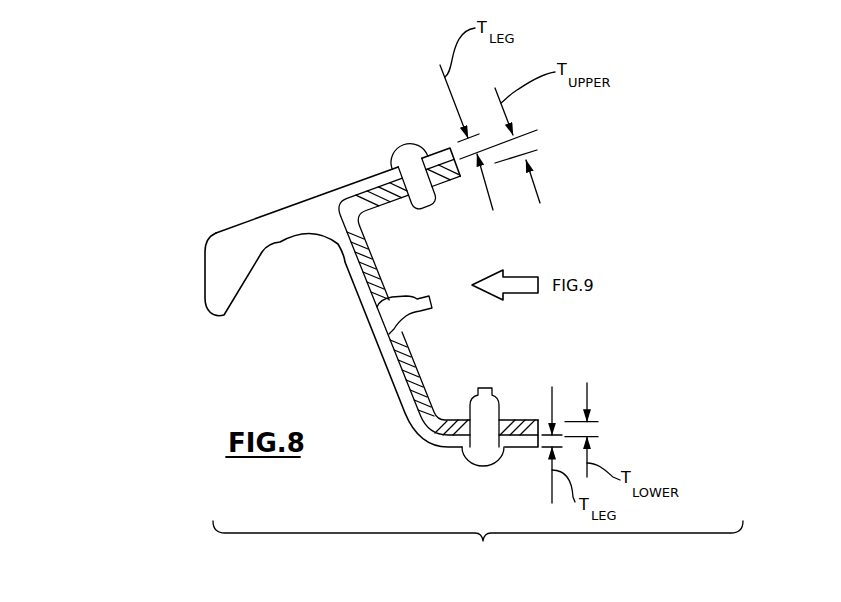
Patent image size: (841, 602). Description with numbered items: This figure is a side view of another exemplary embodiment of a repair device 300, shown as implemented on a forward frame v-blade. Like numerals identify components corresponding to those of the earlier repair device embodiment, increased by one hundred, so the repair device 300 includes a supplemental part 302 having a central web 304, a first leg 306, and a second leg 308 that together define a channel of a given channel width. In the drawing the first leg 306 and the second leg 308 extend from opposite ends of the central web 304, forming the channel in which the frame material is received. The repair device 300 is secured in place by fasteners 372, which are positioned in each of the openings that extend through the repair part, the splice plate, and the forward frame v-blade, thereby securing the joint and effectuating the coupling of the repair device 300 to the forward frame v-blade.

The repair device 300 is at (185, 128).
The supplemental part 302 is at (483, 541).
The central web 304 is at (188, 396).
The first leg 306 is at (642, 120).
The second leg 308 is at (648, 428).
The fasteners 372 is at (397, 145).